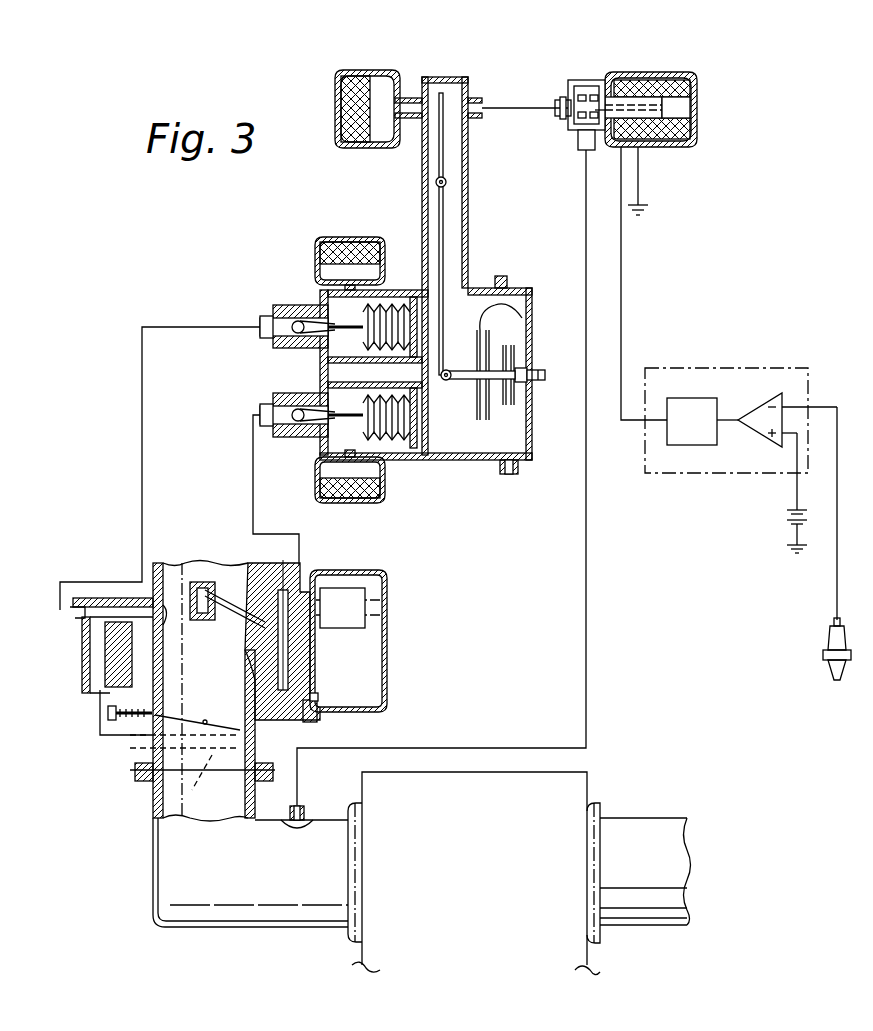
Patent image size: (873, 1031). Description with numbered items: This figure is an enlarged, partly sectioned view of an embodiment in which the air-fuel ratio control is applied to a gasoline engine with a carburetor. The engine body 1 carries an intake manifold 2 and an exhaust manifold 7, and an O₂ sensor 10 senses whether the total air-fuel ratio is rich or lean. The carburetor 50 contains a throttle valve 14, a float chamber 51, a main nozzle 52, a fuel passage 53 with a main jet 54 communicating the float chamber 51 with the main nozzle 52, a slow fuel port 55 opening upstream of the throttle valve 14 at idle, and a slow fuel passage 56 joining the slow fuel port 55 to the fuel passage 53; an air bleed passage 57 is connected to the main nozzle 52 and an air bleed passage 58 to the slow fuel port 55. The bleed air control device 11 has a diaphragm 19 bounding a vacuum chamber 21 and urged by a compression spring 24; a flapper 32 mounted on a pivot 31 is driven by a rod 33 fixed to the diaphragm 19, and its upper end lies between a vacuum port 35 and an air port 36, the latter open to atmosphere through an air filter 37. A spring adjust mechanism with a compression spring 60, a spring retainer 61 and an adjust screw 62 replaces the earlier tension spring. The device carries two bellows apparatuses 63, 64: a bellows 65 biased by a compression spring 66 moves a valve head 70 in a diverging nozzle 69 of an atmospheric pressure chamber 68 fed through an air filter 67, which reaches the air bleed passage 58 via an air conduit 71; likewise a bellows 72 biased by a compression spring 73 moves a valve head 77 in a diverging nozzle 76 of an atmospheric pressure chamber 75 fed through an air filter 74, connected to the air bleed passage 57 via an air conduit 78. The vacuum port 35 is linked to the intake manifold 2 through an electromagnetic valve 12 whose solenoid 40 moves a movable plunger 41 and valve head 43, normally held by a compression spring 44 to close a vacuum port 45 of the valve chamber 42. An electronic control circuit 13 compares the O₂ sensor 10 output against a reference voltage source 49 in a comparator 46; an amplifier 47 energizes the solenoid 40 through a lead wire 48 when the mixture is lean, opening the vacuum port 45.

The engine body 1 is at (355, 965).
The intake manifold 2 is at (253, 910).
The exhaust manifold 7 is at (635, 912).
The O₂ sensor 10 is at (826, 640).
The supplementary fuel feed control device 11 is at (485, 285).
The electromagnetic valve 12 is at (505, 414).
The electronic control circuit 13 is at (741, 413).
The throttle valve 14 is at (160, 745).
The diaphragm 19 is at (522, 318).
The vacuum chamber 21 is at (452, 440).
The compression spring 24 is at (490, 460).
The pivot 31 is at (447, 183).
The flapper 32 is at (445, 160).
The rod 33 is at (490, 395).
The vacuum port 35 is at (478, 98).
The air port 36 is at (410, 98).
The air filter 37 is at (335, 108).
The solenoid 40 is at (685, 135).
The movable plunger 41 is at (630, 97).
The valve chamber 42 is at (585, 80).
The valve head 43 is at (578, 135).
The compression spring 44 is at (598, 135).
The vacuum port 45 is at (560, 116).
The comparator 46 is at (752, 430).
The amplifier 47 is at (683, 440).
The lead wire 48 is at (621, 292).
The reference voltage source 49 is at (785, 520).
The carburetor 50 is at (369, 637).
The float chamber 51 is at (356, 672).
The main nozzle 52 is at (215, 565).
The fuel passage 53 is at (255, 690).
The main jet 54 is at (317, 722).
The slow fuel port 55 is at (110, 705).
The slow fuel passage 56 is at (150, 790).
The air bleed passage 57 is at (295, 592).
The air bleed passage 58 is at (72, 614).
The compression spring 60 is at (490, 400).
The spring retainer 61 is at (514, 350).
The adjust screw 62 is at (540, 382).
The bellows apparatus 63 is at (322, 290).
The bellows apparatus 64 is at (386, 466).
The bellows 65 is at (392, 300).
The compression spring 66 is at (362, 335).
The air filter 67 is at (350, 242).
The atmospheric pressure chamber 68 is at (335, 318).
The diverging nozzle 69 is at (296, 322).
The valve head 70 is at (273, 342).
The air conduit 71 is at (142, 425).
The bellows 72 is at (320, 440).
The compression spring 73 is at (417, 395).
The air filter 74 is at (352, 503).
The atmospheric pressure chamber 75 is at (362, 409).
The diverging nozzle 76 is at (273, 432).
The valve head 77 is at (295, 409).
The air conduit 78 is at (253, 470).